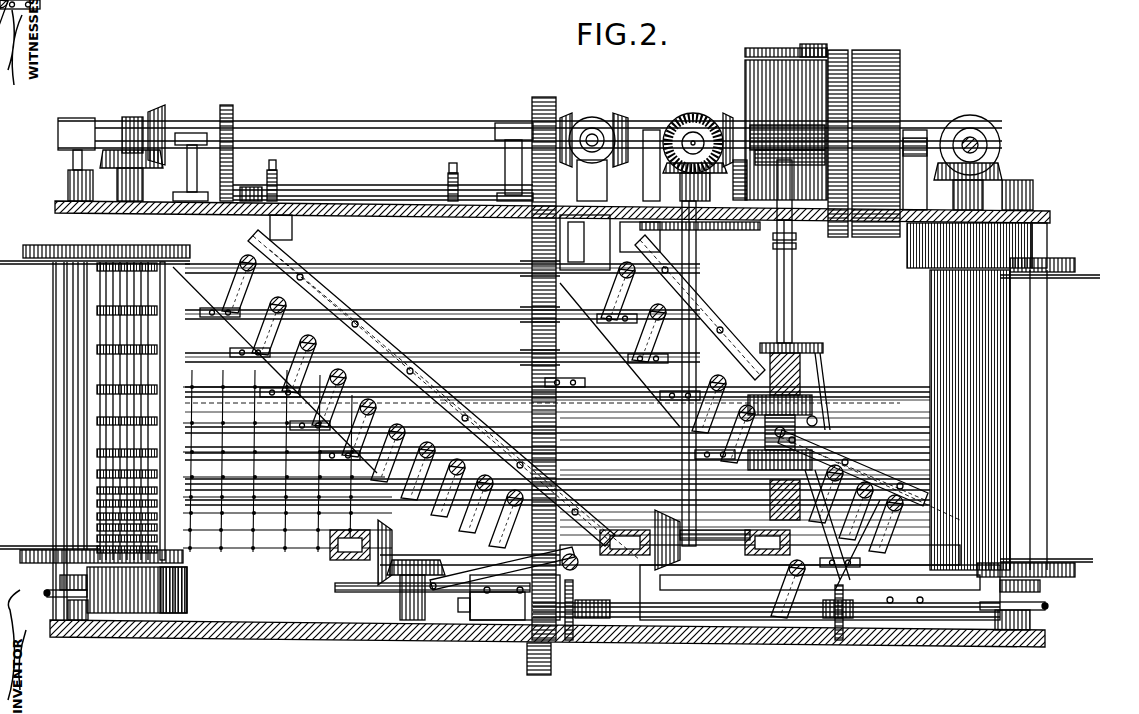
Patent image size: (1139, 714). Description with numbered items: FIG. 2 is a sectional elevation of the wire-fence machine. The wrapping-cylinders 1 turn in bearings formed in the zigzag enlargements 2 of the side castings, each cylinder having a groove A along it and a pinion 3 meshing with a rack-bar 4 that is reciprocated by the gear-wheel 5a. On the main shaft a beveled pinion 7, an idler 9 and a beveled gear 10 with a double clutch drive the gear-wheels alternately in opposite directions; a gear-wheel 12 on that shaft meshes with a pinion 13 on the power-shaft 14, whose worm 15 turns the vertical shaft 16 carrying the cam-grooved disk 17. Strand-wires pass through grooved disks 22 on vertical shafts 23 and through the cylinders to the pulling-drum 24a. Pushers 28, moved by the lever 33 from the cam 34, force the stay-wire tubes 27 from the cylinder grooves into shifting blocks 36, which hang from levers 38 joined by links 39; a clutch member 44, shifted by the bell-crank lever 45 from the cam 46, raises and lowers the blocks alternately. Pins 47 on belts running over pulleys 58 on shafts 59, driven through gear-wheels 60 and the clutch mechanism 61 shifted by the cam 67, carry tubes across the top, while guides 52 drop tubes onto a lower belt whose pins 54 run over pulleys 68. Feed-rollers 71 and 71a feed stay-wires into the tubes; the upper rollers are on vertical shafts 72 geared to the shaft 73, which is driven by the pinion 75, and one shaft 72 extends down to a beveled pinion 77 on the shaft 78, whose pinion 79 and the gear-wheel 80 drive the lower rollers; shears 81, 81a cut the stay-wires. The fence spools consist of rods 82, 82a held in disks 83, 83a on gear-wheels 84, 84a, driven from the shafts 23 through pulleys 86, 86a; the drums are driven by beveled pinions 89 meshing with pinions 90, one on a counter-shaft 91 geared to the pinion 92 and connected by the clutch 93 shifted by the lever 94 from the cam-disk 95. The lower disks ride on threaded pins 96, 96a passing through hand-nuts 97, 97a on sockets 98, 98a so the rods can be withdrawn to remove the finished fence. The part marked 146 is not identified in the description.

The groove A is at (530, 127).
The wrapping-cylinder 1 is at (442, 304).
The enlargement 2 is at (426, 370).
The pinion 3 is at (534, 305).
The rack-bar 4 is at (538, 668).
The gear-wheel 5a is at (532, 105).
The beveled pinion 7 is at (566, 115).
The idler 9 is at (596, 118).
The beveled gear 10 is at (620, 118).
The gear-wheel 12 is at (828, 88).
The pinion 13 is at (852, 125).
The power-shaft 14 is at (915, 135).
The worm 15 is at (786, 130).
The vertical shaft 16 is at (777, 278).
The disk 17 is at (772, 203).
The grooved disk 22 is at (94, 411).
The vertical shaft 23 is at (165, 404).
The pulling-drum 24a is at (930, 348).
The tube 27 is at (455, 266).
The pusher 28 is at (553, 413).
The lever 33 is at (792, 240).
The cam 34 is at (796, 247).
The shifting block 36 is at (450, 287).
The lever 38 is at (460, 309).
The link 39 is at (300, 285).
The movable clutch member 44 is at (815, 420).
The bell-crank lever 45 is at (826, 380).
The cam 46 is at (568, 262).
The pin 47 is at (276, 163).
The guide 52 is at (690, 551).
The pin 54 is at (569, 640).
The pulley 58 is at (362, 183).
The shaft 59 is at (364, 186).
The gear-wheel 60 is at (240, 187).
The clutch mechanism 61 is at (127, 117).
The cam 67 is at (650, 617).
The pulley 68 is at (592, 618).
The feed-roller 71 is at (725, 230).
The feed-roller 71a is at (344, 552).
The vertical shaft 72 is at (650, 128).
The shaft 73 is at (694, 130).
The pinion 75 is at (728, 113).
The beveled pinion 77 is at (700, 545).
The shaft 78 is at (460, 578).
The pinion 79 is at (378, 560).
The gear-wheel 80 is at (340, 589).
The shear mechanism 81 is at (641, 237).
The shear mechanism 81a is at (478, 604).
The vertical rod 82 is at (53, 388).
The vertical rod 82a is at (1047, 440).
The disk 83 is at (561, 273).
The disk 83a is at (15, 546).
The gear-wheel 84 is at (30, 245).
The gear-wheel 84a is at (1096, 572).
The pulley 86 is at (130, 613).
The pulley 86a is at (1047, 233).
The beveled pinion 89 is at (146, 168).
The pinion 90 is at (160, 110).
The counter-shaft 91 is at (980, 146).
The pinion 92 is at (956, 125).
The clutch 93 is at (1000, 172).
The lever 94 is at (812, 48).
The cam-disk 95 is at (760, 57).
The vertical pin 96 is at (60, 580).
The vertical pin 96a is at (1040, 588).
The nut 97 is at (56, 599).
The nut 97a is at (1048, 607).
The socket 98 is at (75, 620).
The socket 98a is at (1012, 630).
The bearing 146 is at (292, 228).